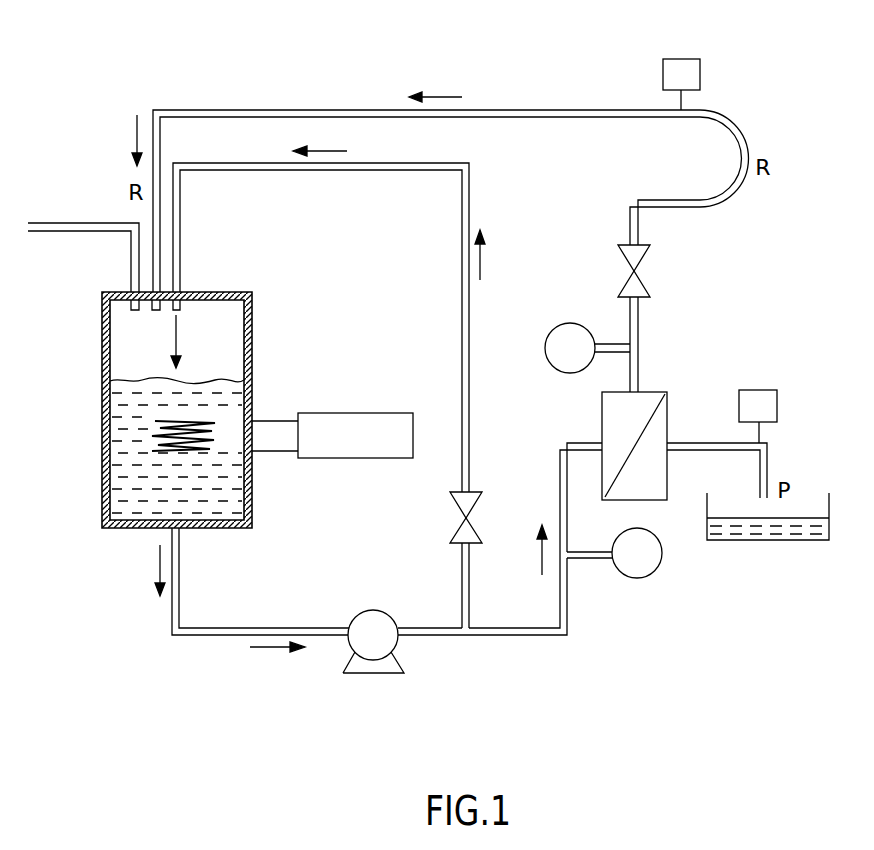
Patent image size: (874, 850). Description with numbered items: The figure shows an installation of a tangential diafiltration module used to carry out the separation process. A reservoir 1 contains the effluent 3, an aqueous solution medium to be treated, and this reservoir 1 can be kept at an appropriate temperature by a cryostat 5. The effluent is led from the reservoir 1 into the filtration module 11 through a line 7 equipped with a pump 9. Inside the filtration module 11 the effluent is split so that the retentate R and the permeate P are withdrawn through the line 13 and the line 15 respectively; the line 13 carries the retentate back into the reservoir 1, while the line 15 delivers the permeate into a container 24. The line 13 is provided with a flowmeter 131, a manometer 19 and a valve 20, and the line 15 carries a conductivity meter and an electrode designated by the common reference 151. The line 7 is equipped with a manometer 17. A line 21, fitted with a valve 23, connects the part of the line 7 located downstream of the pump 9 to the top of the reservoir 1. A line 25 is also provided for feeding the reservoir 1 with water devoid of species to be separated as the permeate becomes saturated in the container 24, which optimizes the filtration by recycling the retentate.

The reservoir 1 is at (252, 328).
The effluent 3 is at (252, 382).
The cryostat 5 is at (232, 452).
The line 7 is at (262, 628).
The pump 9 is at (377, 632).
The filtration module 11 is at (612, 414).
The line 13 is at (672, 173).
The flowmeter 131 is at (686, 78).
The line 15 is at (722, 443).
The conductivity meter and electrode 151 is at (757, 410).
The manometer 17 is at (650, 562).
The manometer 19 is at (567, 338).
The valve 20 is at (640, 254).
The line 21 is at (462, 366).
The valve 23 is at (455, 497).
The container 24 is at (806, 530).
The line 25 is at (78, 223).